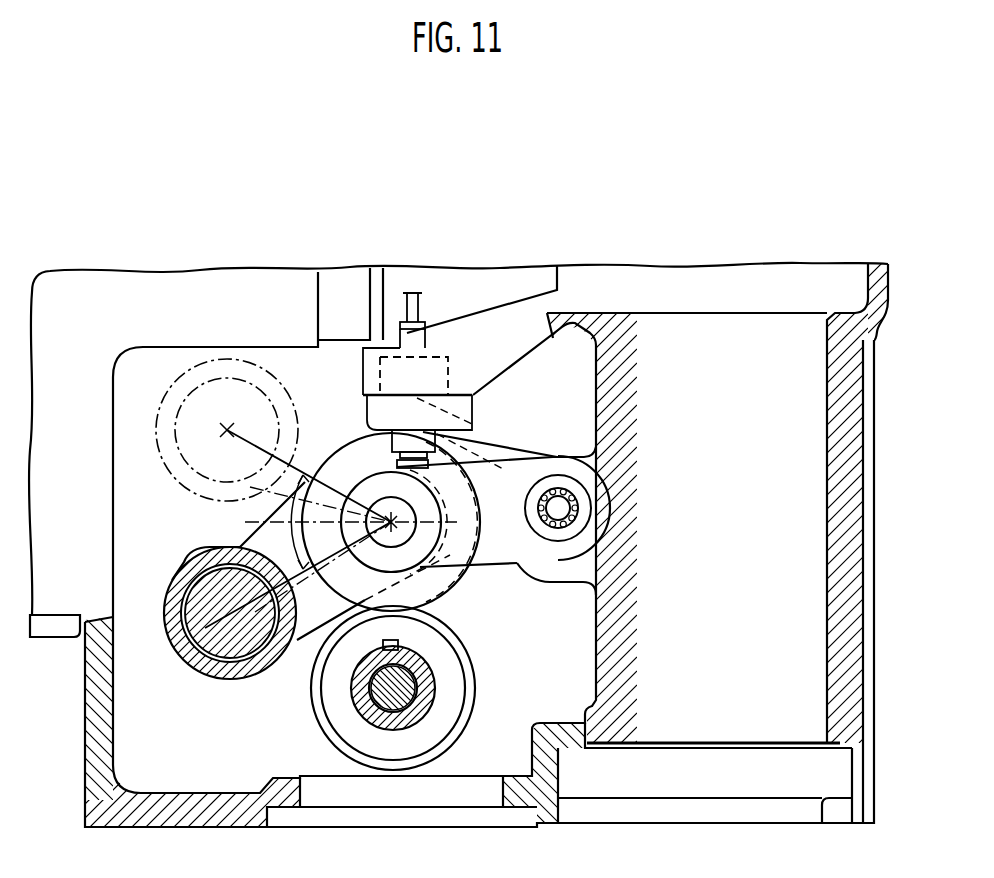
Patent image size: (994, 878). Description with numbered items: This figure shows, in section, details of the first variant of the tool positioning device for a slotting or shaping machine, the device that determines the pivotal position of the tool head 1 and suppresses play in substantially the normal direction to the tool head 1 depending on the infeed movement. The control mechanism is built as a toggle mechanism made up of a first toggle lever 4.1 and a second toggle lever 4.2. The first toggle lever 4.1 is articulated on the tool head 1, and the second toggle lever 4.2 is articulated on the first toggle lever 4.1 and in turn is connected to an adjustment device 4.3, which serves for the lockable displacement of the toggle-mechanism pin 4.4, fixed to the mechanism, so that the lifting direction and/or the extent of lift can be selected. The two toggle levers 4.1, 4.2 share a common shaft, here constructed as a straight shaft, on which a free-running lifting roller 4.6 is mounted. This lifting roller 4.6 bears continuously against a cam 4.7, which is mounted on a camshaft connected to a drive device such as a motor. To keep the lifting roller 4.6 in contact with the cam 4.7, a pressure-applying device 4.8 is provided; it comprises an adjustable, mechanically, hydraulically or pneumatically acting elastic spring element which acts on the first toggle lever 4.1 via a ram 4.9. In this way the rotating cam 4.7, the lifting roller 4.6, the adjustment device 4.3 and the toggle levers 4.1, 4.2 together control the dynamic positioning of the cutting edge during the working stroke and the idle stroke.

The tool head 1 is at (610, 695).
The first toggle lever 4.1 is at (550, 560).
The second toggle lever 4.2 is at (248, 676).
The shaft 4.3 is at (217, 656).
The toggle-mechanism pin 4.4 is at (227, 620).
The lifting roller 4.6 is at (403, 593).
The cam 4.7 is at (460, 677).
The pressure-applying device 4.8 is at (390, 378).
The ram 4.9 is at (500, 437).